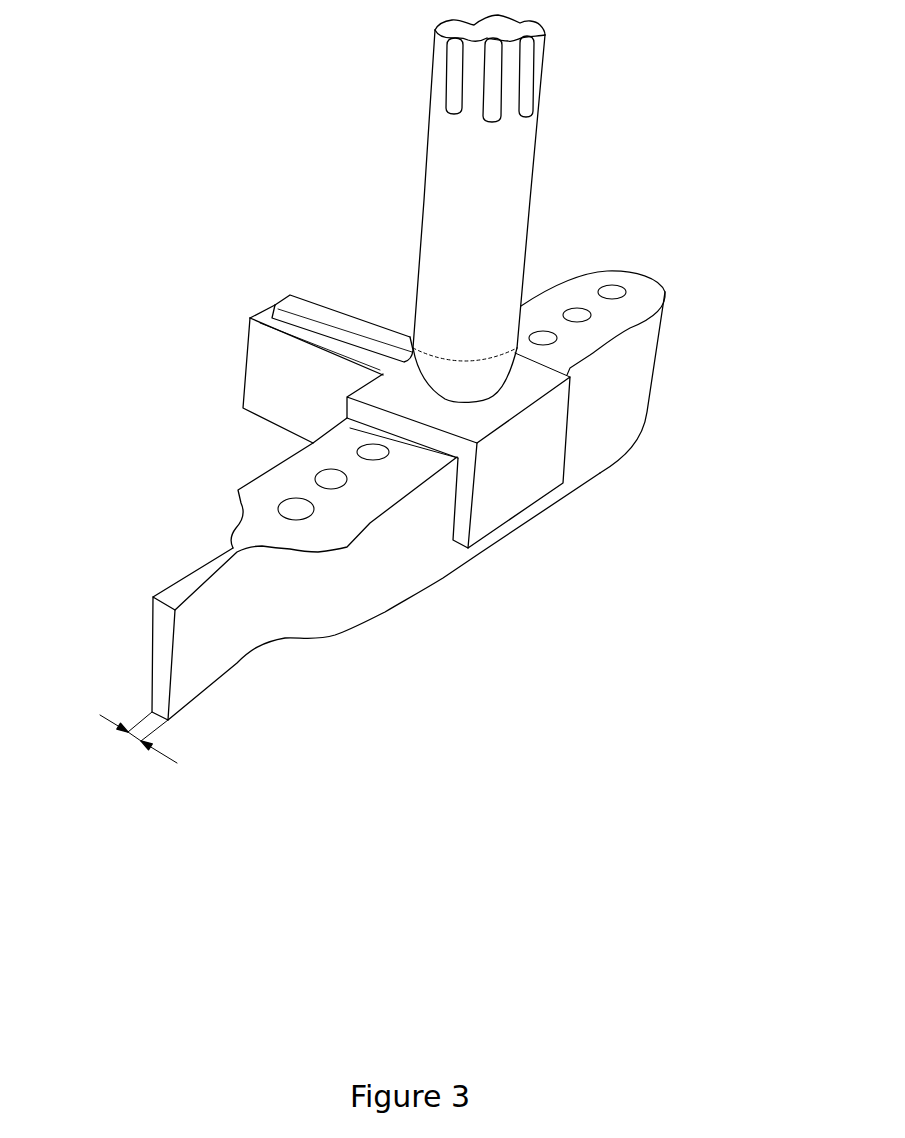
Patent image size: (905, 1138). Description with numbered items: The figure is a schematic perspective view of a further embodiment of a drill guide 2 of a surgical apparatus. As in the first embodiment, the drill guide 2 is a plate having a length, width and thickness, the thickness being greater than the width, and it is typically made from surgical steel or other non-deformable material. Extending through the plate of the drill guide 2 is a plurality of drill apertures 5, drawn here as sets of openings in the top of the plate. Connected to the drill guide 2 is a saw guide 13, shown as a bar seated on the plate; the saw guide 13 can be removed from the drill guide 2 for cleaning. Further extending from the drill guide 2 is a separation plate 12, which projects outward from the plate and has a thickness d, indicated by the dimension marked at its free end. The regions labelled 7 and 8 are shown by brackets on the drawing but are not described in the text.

The drill guide 2 is at (174, 185).
The drill apertures 5 is at (363, 452).
The first plate / flange 7 is at (640, 462).
The block / body 8 is at (442, 613).
The separation plate 12 is at (200, 578).
The saw guide 13 is at (332, 317).
The thickness d is at (130, 719).